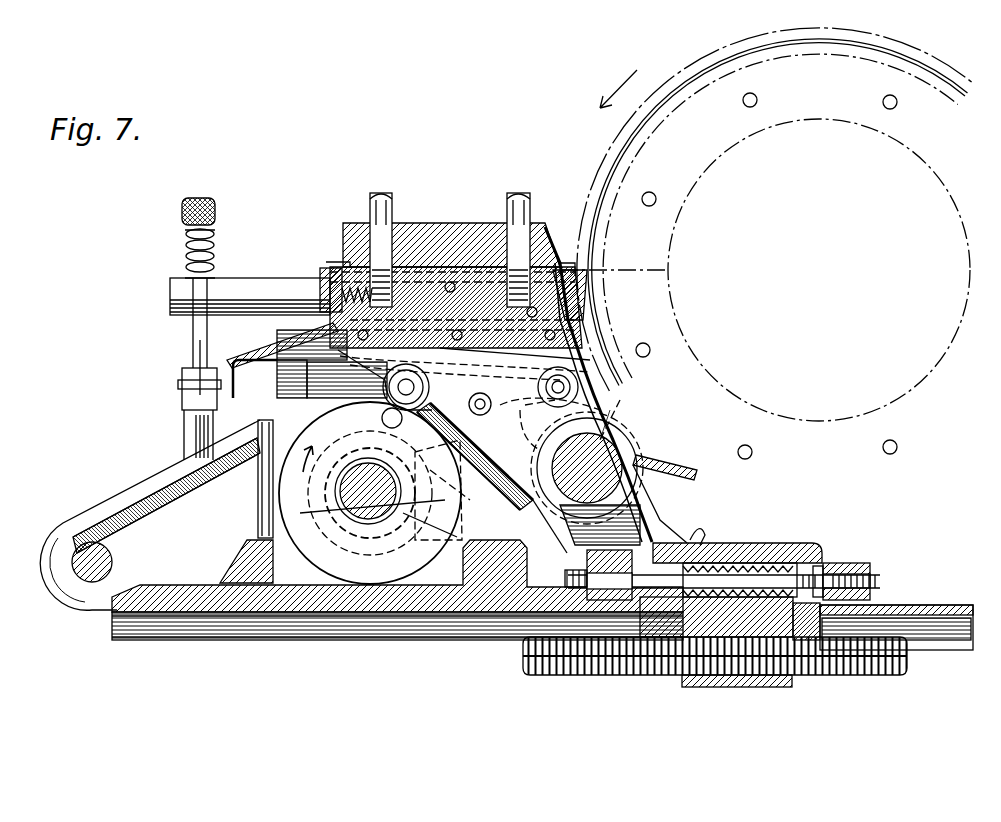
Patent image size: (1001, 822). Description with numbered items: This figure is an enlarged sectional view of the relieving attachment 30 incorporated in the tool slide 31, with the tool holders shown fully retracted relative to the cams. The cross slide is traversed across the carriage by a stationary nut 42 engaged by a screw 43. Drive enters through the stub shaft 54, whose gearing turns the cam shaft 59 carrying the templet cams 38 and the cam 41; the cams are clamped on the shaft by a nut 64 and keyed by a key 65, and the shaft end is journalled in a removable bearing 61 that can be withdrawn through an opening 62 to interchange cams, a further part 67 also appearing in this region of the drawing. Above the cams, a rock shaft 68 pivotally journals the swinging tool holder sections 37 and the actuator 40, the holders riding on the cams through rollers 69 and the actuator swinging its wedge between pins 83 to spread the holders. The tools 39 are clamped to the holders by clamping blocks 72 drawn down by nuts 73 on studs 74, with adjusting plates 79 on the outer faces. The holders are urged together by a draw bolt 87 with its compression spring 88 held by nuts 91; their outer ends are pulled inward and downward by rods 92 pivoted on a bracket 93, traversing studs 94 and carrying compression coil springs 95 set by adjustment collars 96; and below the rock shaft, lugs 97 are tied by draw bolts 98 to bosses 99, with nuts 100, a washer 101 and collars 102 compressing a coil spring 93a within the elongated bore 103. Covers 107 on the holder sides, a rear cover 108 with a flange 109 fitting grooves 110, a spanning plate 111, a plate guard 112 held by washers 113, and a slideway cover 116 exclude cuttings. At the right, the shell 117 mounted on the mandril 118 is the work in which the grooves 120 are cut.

The relieving attachment 30 is at (418, 278).
The tool slide 31 is at (140, 480).
The swinging tool holder sections 37 is at (612, 398).
The templet cams 38 is at (287, 503).
The tools 39 is at (585, 312).
The actuator element 40 is at (482, 470).
The cam 41 is at (430, 517).
The stationary nut 42 is at (726, 684).
The screw 43 is at (862, 668).
The stub shaft 54 is at (110, 548).
The cam shaft 59 is at (376, 470).
The bearing 61 is at (262, 555).
The opening 62 is at (262, 466).
The nut 64 is at (422, 462).
The key 65 is at (333, 446).
The stop 67 is at (320, 652).
The rock shaft 68 is at (612, 452).
The rollers 69 is at (383, 388).
The clamping blocks 72 is at (556, 238).
The nuts 73 is at (550, 222).
The studs 74 is at (518, 192).
The plates 79 is at (328, 265).
The pins 83 is at (478, 396).
The draw bolt 87 is at (578, 372).
The compression spring 88 is at (548, 398).
The nuts 91 is at (538, 383).
The rods 92 is at (196, 330).
The bracket 93 is at (184, 424).
The spring 93a is at (760, 562).
The studs 94 is at (252, 284).
The compression coil springs 95 is at (186, 258).
The adjustment collars 96 is at (182, 208).
The lugs 97 is at (585, 556).
The draw bolts 98 is at (695, 548).
The bosses 99 is at (795, 562).
The nuts 100 is at (507, 620).
The washer 101 is at (840, 560).
The collars 102 is at (820, 563).
The bore 103 is at (692, 532).
The covers 107 is at (257, 392).
The cover 108 is at (263, 345).
The flange 109 is at (322, 280).
The grooves 110 is at (336, 296).
The plate 111 is at (412, 230).
The plate guard 112 is at (655, 462).
The washers 113 is at (700, 470).
The cover 116 is at (910, 608).
The shell 117 is at (745, 72).
The mandril 118 is at (826, 122).
The grooves 120 is at (664, 98).